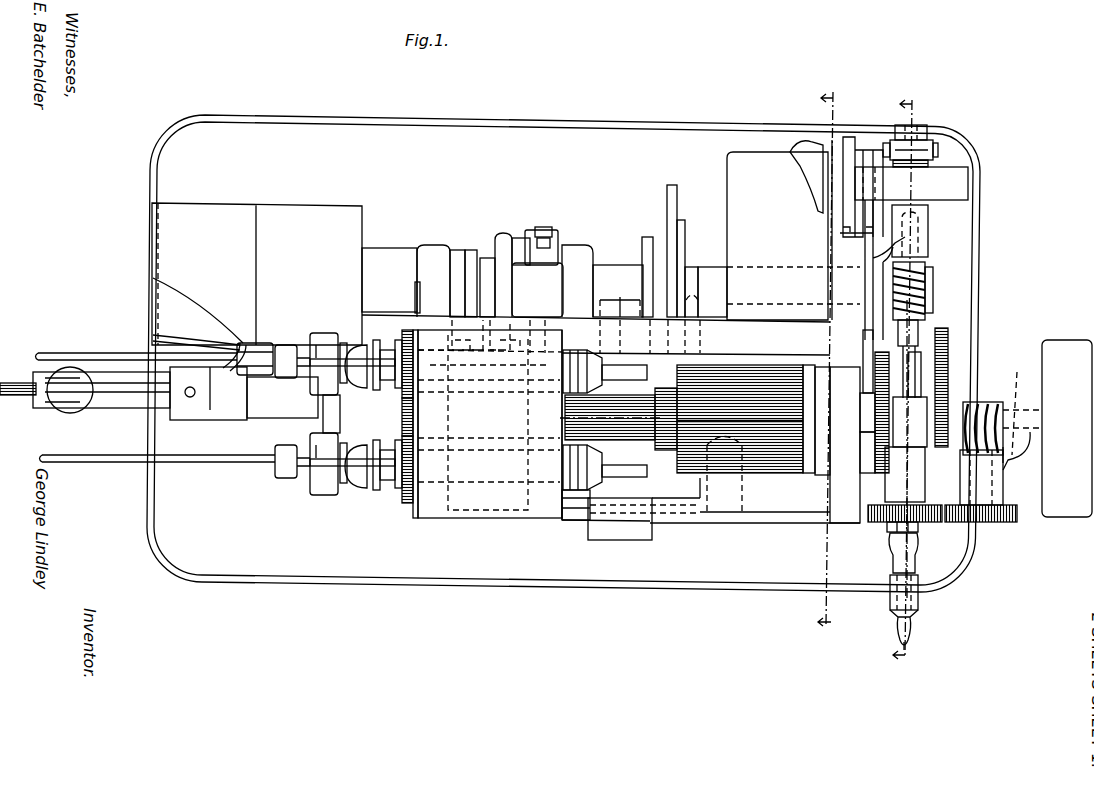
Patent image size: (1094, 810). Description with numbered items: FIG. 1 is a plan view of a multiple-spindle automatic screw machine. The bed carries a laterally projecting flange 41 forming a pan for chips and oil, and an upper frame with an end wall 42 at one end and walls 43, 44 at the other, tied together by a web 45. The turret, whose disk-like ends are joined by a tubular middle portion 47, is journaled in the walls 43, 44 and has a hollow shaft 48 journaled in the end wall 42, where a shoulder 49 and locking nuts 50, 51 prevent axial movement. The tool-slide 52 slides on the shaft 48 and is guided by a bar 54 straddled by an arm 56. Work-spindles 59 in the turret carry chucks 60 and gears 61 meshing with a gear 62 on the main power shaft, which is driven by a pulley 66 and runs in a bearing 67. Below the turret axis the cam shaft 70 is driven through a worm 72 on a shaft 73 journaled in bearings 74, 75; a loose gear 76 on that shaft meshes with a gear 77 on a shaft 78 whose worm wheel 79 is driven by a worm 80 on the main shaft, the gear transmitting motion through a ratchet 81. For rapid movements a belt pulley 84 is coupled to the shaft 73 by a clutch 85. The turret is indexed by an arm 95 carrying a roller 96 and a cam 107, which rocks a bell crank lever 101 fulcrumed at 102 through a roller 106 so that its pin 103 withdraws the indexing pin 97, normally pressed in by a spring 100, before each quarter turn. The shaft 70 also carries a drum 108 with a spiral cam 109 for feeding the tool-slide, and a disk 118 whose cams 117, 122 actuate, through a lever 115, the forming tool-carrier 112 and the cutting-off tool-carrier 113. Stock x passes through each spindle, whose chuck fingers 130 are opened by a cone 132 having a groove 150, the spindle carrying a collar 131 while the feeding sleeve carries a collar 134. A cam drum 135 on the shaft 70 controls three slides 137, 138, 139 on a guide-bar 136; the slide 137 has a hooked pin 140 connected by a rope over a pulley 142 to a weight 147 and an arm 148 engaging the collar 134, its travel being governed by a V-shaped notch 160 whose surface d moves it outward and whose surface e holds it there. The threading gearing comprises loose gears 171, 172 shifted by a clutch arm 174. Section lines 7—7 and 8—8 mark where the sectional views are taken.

The section line 7— 7 is at (905, 378).
The section line 8— 8 is at (827, 359).
The flange 41 is at (750, 576).
The end wall 42 is at (848, 512).
The wall 43 is at (413, 520).
The wall 44 is at (565, 520).
The web 45 is at (498, 520).
The tubular middle portion 47 is at (470, 490).
The hollow shaft 48 is at (636, 438).
The shoulder 49 is at (825, 458).
The locking nut 50 is at (870, 447).
The locking nut 51 is at (870, 425).
The tool-slide 52 is at (775, 465).
The bar 54 is at (596, 335).
The arm 56 is at (808, 473).
The work-spindle 59 is at (485, 378).
The chuck 60 is at (572, 372).
The gear 61 is at (405, 343).
The gear 62 is at (414, 409).
The pulley 66 is at (1056, 342).
The bearing 67 is at (1022, 412).
The cam shaft 70 is at (400, 255).
The worm 72 is at (932, 290).
The shaft 73 is at (920, 336).
The bearing 74 is at (920, 224).
The bearing 75 is at (922, 487).
The gear 76 is at (928, 526).
The gear 77 is at (1003, 523).
The shaft 78 is at (995, 490).
The worm wheel 79 is at (1022, 404).
The worm 80 is at (985, 404).
The ratchet 81 is at (916, 545).
The belt pulley 84 is at (952, 187).
The clutch 85 is at (930, 150).
The arm 95 is at (463, 277).
The roller 96 is at (467, 348).
The indexing pin 97 is at (563, 262).
The spring 100 is at (550, 230).
The bell crank lever 101 is at (518, 240).
The fulcrum 102 is at (503, 247).
The pin 103 is at (540, 229).
The roller 106 is at (480, 405).
The cam 107 is at (486, 265).
The drum 108 is at (745, 150).
The spiral cam 109 is at (800, 144).
The forming tool-carrier 112 is at (626, 528).
The cutting-off tool-carrier 113 is at (618, 298).
The lever 115 is at (691, 292).
The cam 117 is at (684, 235).
The disk 118 is at (676, 210).
The cam 122 is at (655, 240).
The fingers 130 is at (329, 350).
The collar 131 is at (300, 418).
The cone 132 is at (358, 345).
The collar 134 is at (288, 345).
The cam drum 135 is at (167, 245).
The guide-bar 136 is at (118, 402).
The slide 137 is at (222, 410).
The slide 138 is at (270, 418).
The slide 139 is at (342, 418).
The hooked pin 140 is at (118, 353).
The pulley 142 is at (33, 394).
The weight 147 is at (64, 412).
The arm 148 is at (248, 345).
The peripheral groove 150 is at (376, 390).
The V-shaped notch 160 is at (187, 317).
The low-speed gear 171 is at (950, 346).
The gear 172 is at (875, 362).
The arm 174 is at (919, 450).
The cam surface e is at (153, 265).
The cam surface d is at (193, 315).
The stock x is at (106, 352).